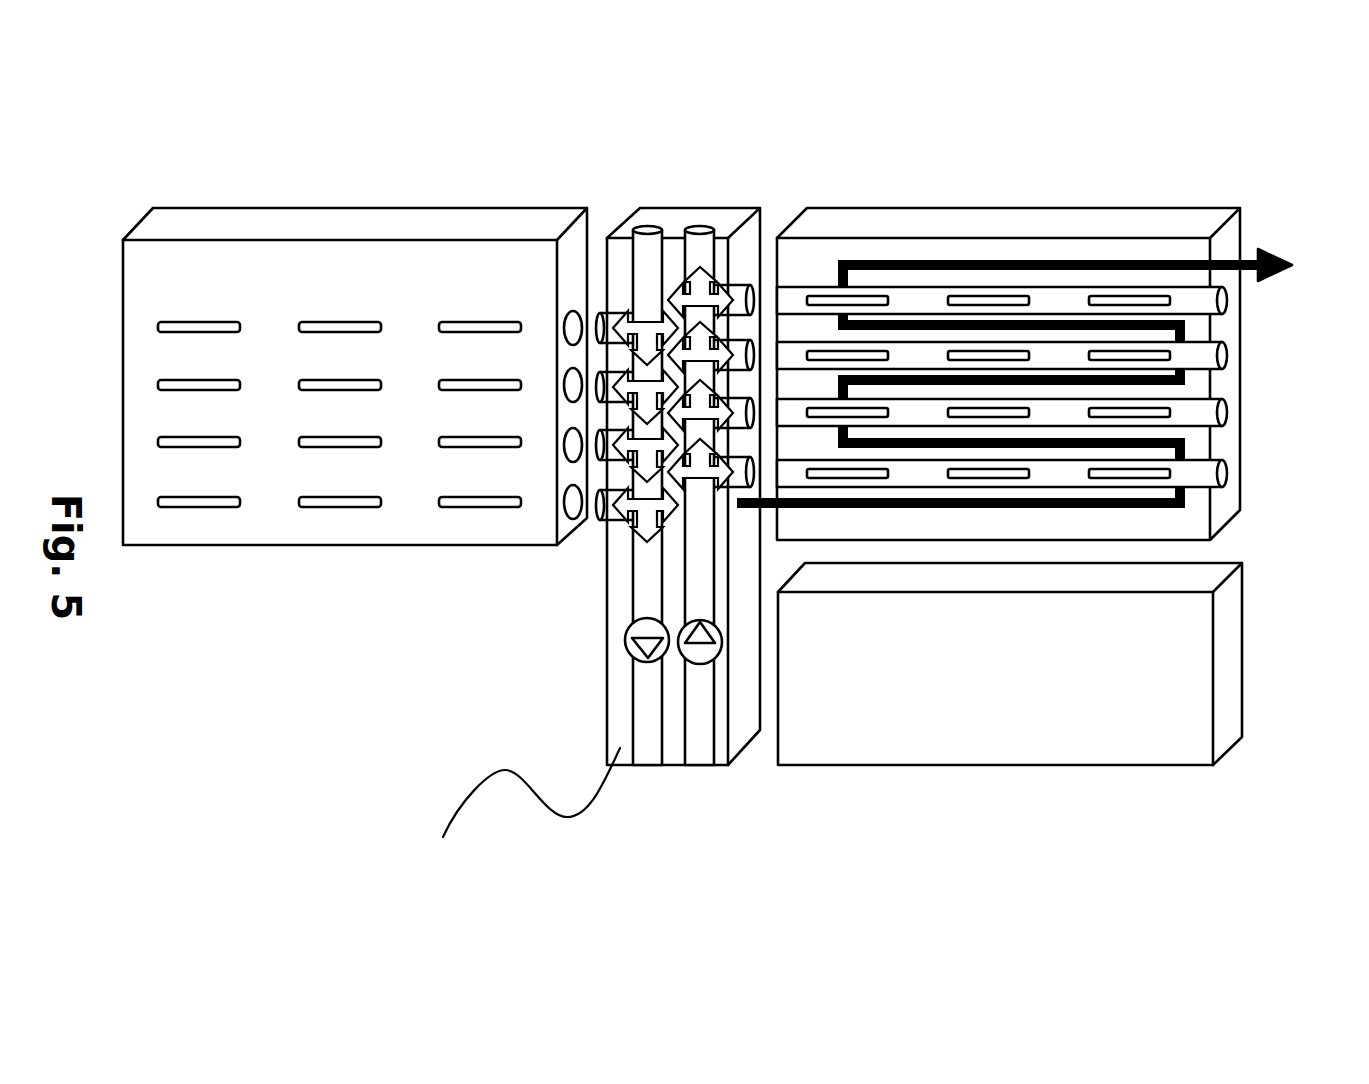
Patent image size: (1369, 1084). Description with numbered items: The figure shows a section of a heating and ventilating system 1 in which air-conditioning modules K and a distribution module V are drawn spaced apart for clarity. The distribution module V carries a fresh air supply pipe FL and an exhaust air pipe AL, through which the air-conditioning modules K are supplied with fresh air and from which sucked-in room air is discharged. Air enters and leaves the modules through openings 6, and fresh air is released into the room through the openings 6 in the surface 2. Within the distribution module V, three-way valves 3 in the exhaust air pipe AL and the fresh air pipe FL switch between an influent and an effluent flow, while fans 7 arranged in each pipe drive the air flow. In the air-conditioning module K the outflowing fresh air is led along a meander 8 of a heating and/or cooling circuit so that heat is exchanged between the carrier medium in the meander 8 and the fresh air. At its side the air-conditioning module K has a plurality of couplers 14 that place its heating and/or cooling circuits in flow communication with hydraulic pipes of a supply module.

The system 1 is at (162, 633).
The surface 2 is at (527, 523).
The three-way valve 3 is at (712, 290).
The opening 6 is at (342, 507).
The fan 7 is at (627, 642).
The meander 8 is at (1007, 505).
The coupler 14 is at (572, 310).